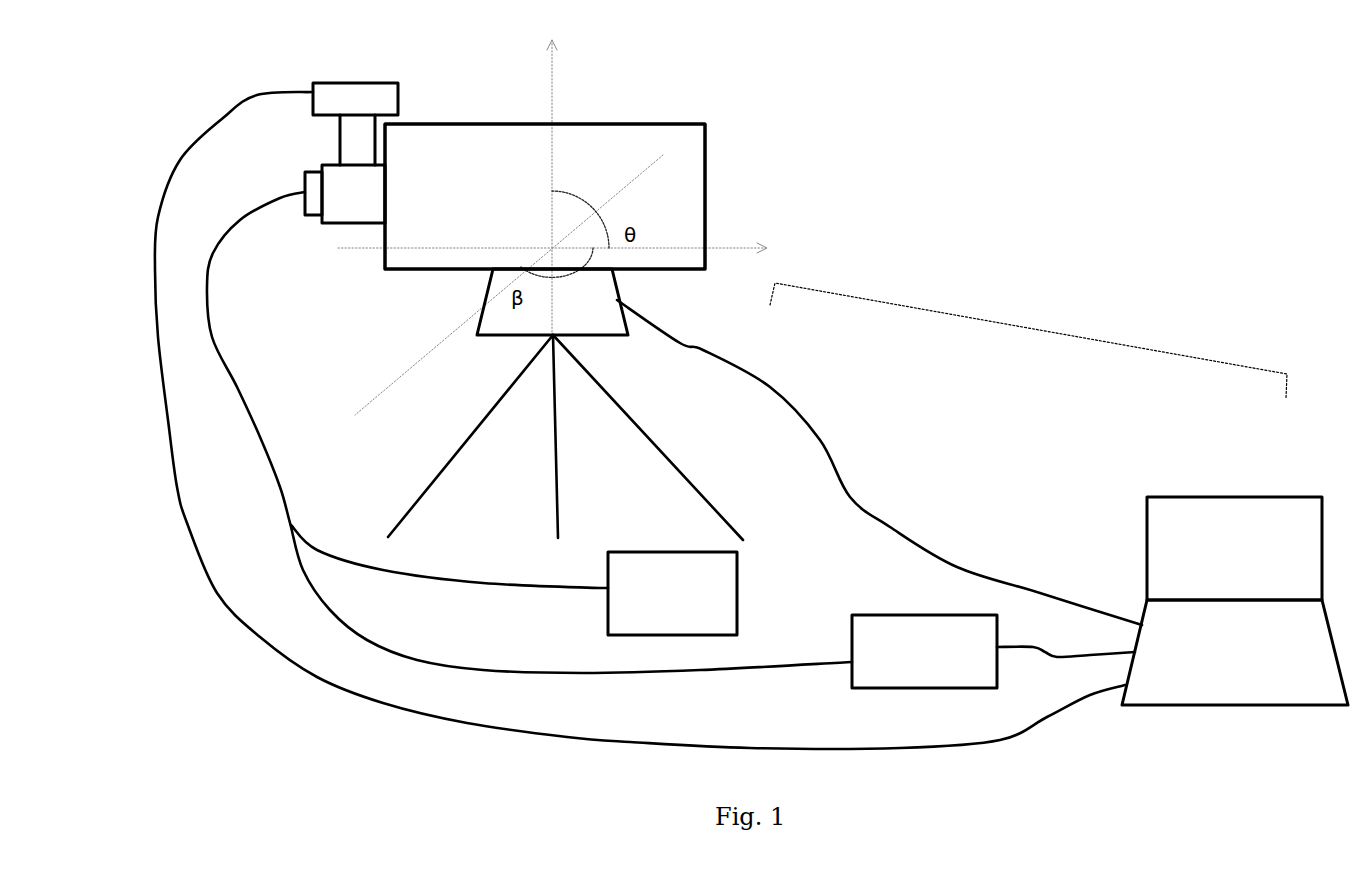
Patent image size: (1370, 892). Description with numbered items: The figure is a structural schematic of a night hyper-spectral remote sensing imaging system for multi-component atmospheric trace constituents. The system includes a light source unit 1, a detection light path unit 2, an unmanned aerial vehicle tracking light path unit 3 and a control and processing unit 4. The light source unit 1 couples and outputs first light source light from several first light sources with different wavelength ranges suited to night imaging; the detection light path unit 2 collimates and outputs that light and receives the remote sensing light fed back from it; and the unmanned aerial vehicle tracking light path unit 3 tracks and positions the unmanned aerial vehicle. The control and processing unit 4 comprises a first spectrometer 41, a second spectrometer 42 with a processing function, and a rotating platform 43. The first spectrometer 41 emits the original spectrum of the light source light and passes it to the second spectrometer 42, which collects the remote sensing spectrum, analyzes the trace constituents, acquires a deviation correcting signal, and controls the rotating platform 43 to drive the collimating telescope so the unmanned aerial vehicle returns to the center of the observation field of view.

The light source unit 1 is at (737, 568).
The detection light path unit 2 is at (617, 123).
The unmanned aerial vehicle tracking light path unit 3 is at (545, 196).
The control and processing unit 4 is at (1033, 326).
The first spectrometer 41 is at (582, 292).
The second spectrometer 42 is at (943, 615).
The rotating platform 43 is at (1223, 500).